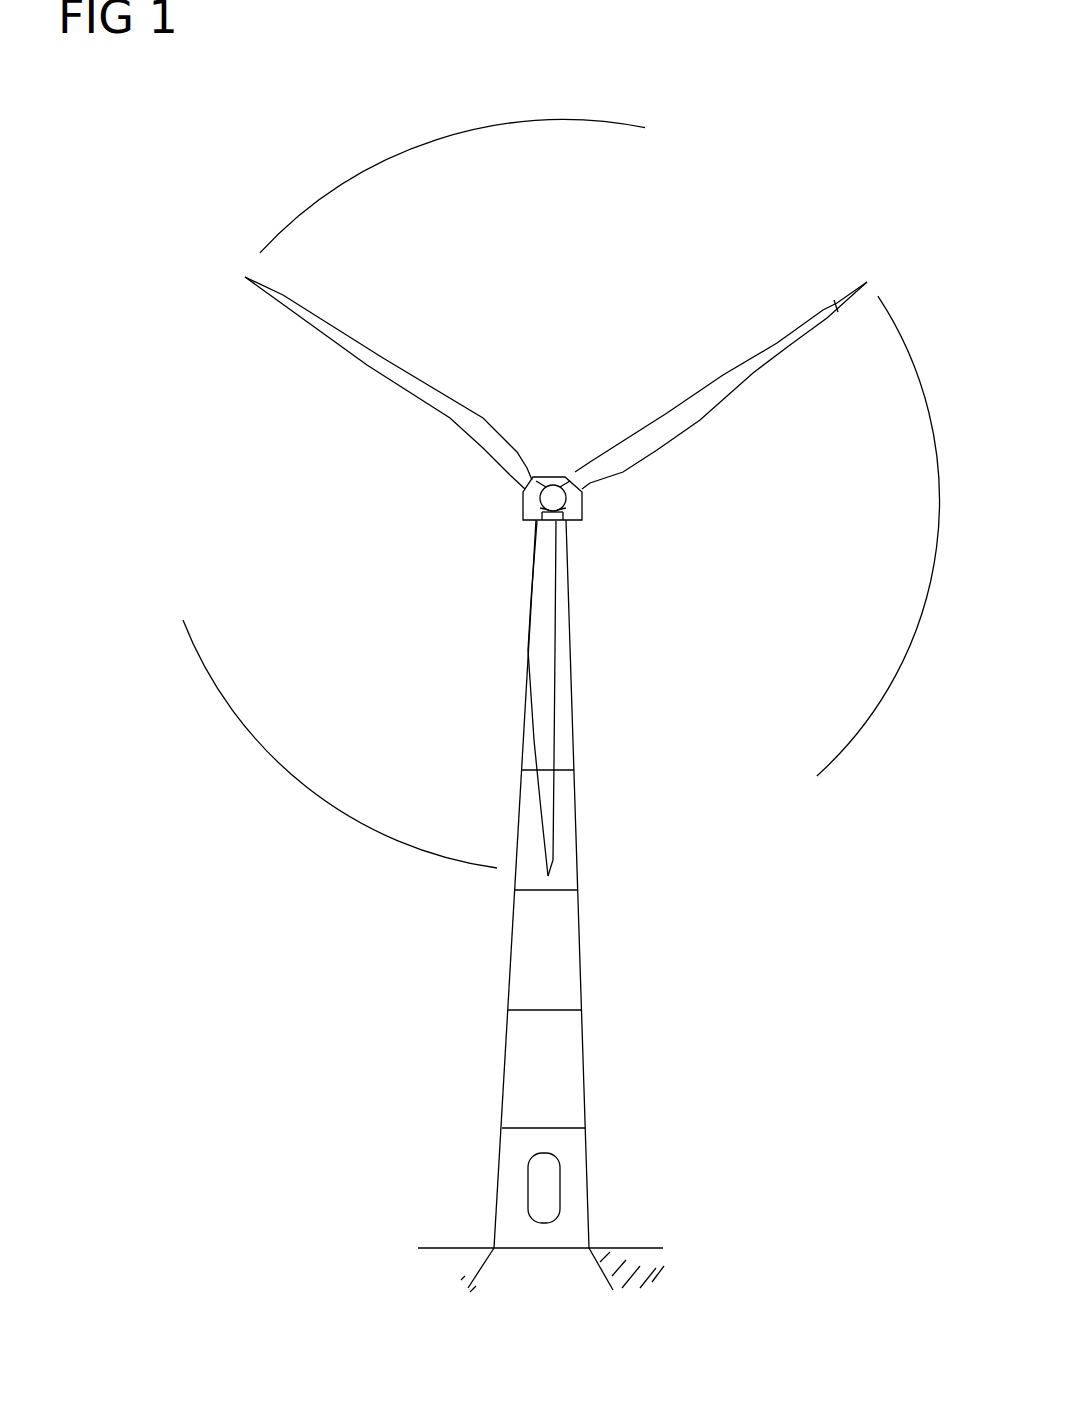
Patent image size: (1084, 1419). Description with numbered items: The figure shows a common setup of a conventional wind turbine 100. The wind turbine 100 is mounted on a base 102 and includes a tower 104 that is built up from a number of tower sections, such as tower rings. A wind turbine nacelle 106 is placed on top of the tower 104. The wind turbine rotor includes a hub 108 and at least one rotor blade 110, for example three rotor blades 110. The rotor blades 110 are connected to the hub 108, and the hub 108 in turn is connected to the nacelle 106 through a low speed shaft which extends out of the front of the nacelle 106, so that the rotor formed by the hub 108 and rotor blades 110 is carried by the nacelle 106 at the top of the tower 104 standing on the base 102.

The wind turbine 100 is at (490, 1077).
The base 102 is at (483, 1278).
The tower 104 is at (572, 962).
The wind turbine nacelle 106 is at (580, 517).
The hub 108 is at (522, 492).
The rotor blade 110 is at (550, 735).